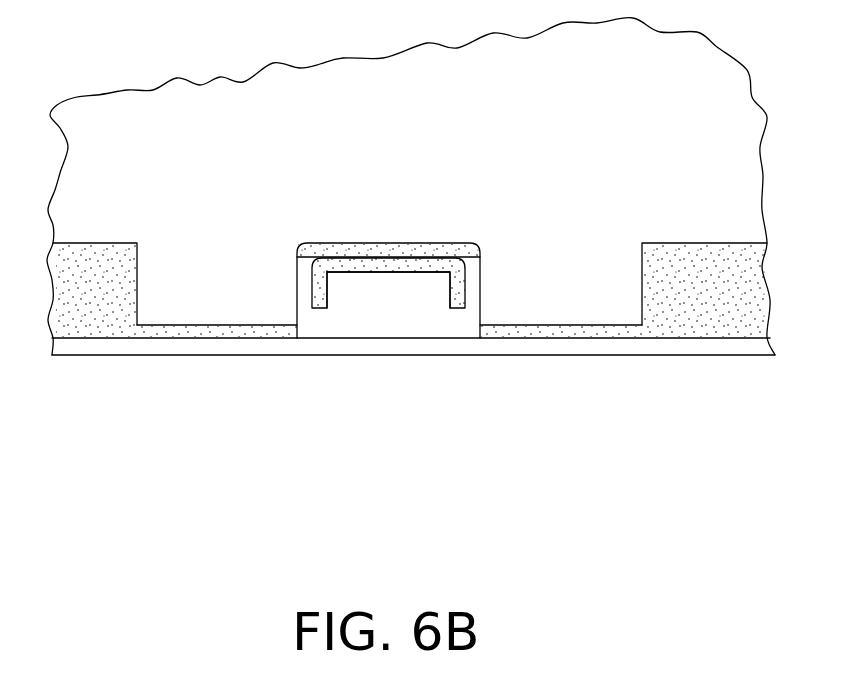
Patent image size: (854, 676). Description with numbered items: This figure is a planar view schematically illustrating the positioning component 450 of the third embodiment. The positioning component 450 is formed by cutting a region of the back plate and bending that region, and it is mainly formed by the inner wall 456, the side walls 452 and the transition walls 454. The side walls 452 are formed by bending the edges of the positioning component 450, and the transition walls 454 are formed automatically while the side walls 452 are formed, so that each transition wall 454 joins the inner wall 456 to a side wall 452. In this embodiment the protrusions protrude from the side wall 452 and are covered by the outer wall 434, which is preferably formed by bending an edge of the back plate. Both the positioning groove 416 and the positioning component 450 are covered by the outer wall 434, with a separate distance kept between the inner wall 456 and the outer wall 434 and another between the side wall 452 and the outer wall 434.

The positioning groove 416 is at (352, 316).
The outer wall 434 is at (694, 348).
The positioning component 450 is at (403, 368).
The side wall 452 is at (463, 262).
The transition wall 454 is at (458, 284).
The inner wall 456 is at (382, 273).